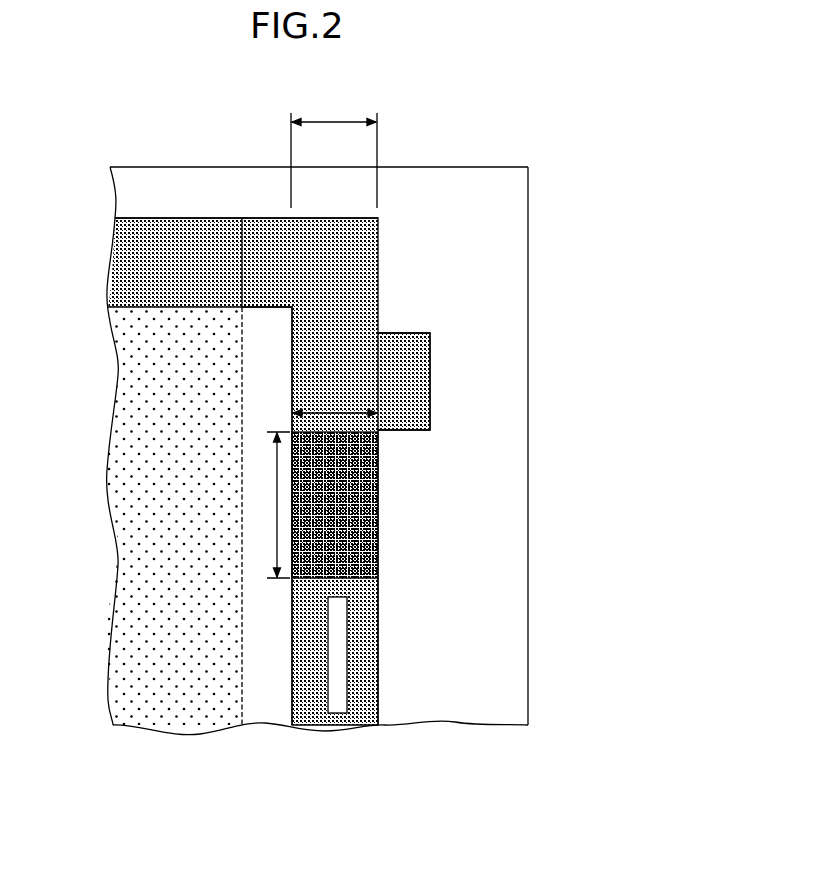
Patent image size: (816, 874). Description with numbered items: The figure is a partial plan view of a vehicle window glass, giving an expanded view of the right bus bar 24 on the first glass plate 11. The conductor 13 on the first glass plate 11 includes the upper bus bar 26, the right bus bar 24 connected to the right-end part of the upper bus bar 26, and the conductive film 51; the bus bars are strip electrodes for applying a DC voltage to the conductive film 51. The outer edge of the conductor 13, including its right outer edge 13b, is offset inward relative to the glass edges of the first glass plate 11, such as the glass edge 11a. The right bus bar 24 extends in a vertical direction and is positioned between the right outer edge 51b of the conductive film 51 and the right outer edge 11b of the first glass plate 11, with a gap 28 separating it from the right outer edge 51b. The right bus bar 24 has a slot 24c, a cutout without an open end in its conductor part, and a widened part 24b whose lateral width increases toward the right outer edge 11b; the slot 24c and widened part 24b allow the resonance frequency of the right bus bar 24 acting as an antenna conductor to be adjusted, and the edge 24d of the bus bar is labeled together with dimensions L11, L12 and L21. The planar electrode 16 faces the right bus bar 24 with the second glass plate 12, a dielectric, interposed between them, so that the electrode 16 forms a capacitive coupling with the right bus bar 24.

The first glass plate 11 is at (248, 185).
The glass edge 11a is at (458, 166).
The right outer edge of the first glass plate 11b is at (529, 447).
The second glass plate 12 is at (210, 190).
The conductor 13 is at (376, 419).
The upper bus bar 26 is at (153, 238).
The right bus bar 24 is at (337, 323).
The widened part 24b is at (407, 380).
The slot 24c is at (338, 695).
The edge of wiring 24d is at (292, 678).
The right outer edge of the conductor 13b is at (380, 678).
The electrode 16 is at (345, 537).
The gap 28 is at (267, 361).
The conductive film 51 is at (150, 468).
The right outer edge of the conductive film 51b is at (242, 392).
The width dimension L11 is at (335, 401).
The length dimension L12 is at (261, 505).
The width dimension L21 is at (334, 153).